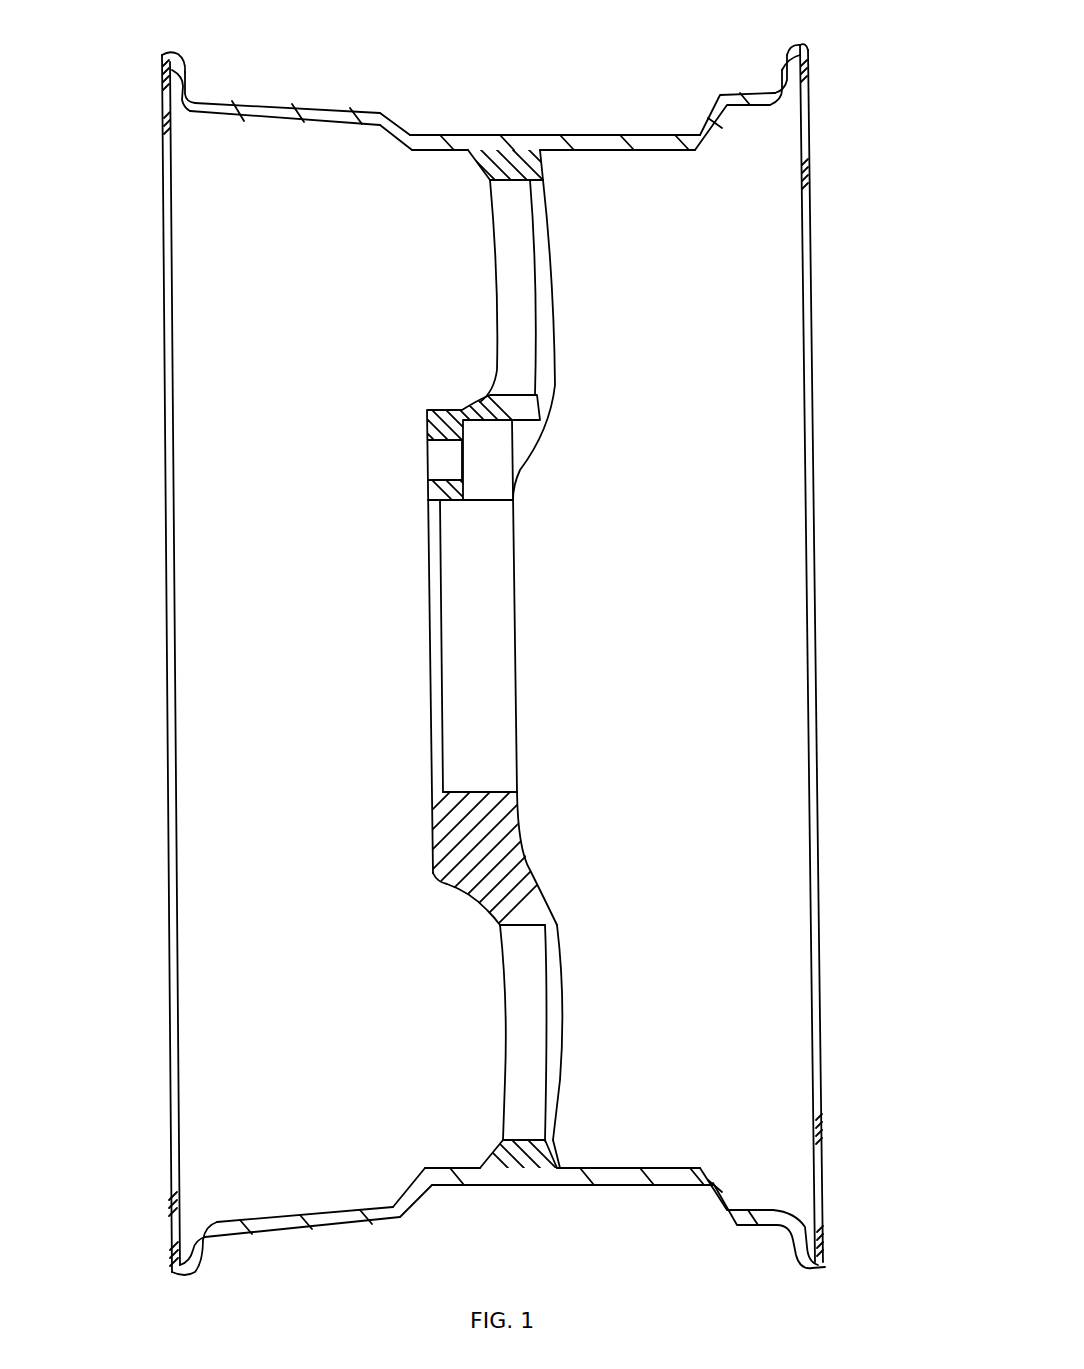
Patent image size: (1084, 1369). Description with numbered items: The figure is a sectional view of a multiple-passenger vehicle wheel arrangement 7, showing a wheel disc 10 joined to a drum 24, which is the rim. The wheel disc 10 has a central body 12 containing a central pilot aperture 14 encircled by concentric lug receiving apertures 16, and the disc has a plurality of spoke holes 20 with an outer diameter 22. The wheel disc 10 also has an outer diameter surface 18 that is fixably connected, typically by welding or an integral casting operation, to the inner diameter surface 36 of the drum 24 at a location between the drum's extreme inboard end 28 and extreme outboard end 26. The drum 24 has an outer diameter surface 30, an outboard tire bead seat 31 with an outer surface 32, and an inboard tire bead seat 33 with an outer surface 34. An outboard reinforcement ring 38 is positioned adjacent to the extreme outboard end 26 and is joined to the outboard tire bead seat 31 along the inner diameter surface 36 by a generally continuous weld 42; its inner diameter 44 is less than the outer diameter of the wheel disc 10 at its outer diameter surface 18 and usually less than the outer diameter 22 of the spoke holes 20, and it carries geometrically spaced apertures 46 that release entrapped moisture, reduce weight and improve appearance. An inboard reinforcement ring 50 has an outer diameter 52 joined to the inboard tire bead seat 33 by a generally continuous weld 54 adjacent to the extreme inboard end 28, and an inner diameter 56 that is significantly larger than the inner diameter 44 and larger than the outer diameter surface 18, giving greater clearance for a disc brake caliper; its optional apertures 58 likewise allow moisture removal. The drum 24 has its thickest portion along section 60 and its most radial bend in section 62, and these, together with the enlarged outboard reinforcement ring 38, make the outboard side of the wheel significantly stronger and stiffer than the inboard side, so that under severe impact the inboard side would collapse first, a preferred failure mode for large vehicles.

The multiple-passenger vehicle wheel arrangement 7 is at (399, 86).
The wheel disc 10 is at (548, 410).
The central body 12 is at (522, 818).
The central pilot aperture 14 is at (510, 790).
The lug receiving apertures 16 is at (505, 500).
The outer diameter surface 18 is at (560, 1168).
The spoke holes 20 is at (535, 1050).
The outer diameter of spoke holes 22 is at (517, 1150).
The drum 24 is at (625, 152).
The extreme outboard end 26 is at (810, 45).
The extreme inboard end 28 is at (160, 61).
The outer diameter surface 30 is at (572, 134).
The outboard tire bead seat 31 is at (780, 72).
The outer surface of outboard tire bead seat 32 is at (782, 62).
The inboard tire bead seat 33 is at (183, 84).
The outer surface of inboard tire bead seat 34 is at (185, 60).
The inner diameter surface 36 is at (540, 178).
The outboard reinforcement ring 38 is at (824, 1128).
The weld 42 is at (822, 1258).
The inner diameter of outboard reinforcement ring 44 is at (822, 1105).
The apertures 46 is at (823, 1160).
The inboard reinforcement ring 50 is at (160, 122).
The outer diameter of inboard reinforcement ring 52 is at (190, 1275).
The weld 54 is at (170, 1266).
The inner diameter of inboard reinforcement ring 56 is at (180, 1200).
The apertures 58 is at (172, 104).
The thickest portion section 60 is at (583, 1185).
The most radial bend section 62 is at (735, 1200).